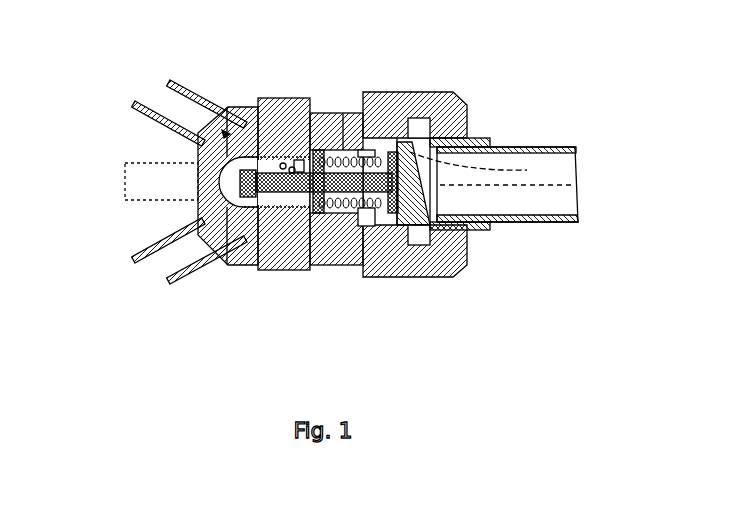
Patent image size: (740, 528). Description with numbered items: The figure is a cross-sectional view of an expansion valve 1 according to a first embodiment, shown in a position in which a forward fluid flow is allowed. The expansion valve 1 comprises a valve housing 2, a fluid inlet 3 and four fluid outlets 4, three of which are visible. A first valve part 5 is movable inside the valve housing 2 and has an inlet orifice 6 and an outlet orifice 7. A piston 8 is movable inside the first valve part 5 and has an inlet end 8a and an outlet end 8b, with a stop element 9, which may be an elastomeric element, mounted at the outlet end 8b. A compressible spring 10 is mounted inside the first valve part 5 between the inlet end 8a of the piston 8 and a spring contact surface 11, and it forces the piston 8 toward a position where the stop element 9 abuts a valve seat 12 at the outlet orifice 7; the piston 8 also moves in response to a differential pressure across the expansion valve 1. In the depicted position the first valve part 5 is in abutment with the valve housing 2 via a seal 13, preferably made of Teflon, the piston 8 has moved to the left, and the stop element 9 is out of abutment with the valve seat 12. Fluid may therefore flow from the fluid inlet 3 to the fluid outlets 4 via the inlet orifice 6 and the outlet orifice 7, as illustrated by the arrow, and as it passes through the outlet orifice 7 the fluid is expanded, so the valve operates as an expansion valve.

The expansion valve 1 is at (533, 60).
The valve housing 2 is at (363, 110).
The fluid inlet 3 is at (550, 192).
The fluid outlets 4 is at (138, 180).
The first valve part 5 is at (320, 148).
The inlet orifice 6 is at (318, 205).
The outlet orifice 7 is at (293, 197).
The piston 8 is at (275, 195).
The inlet end 8a is at (422, 215).
The outlet end 8b is at (240, 190).
The stop element 9 is at (294, 168).
The compressible spring 10 is at (373, 218).
The spring contact surface 11 is at (340, 222).
The valve seat 12 is at (282, 164).
The seal 13 is at (298, 160).